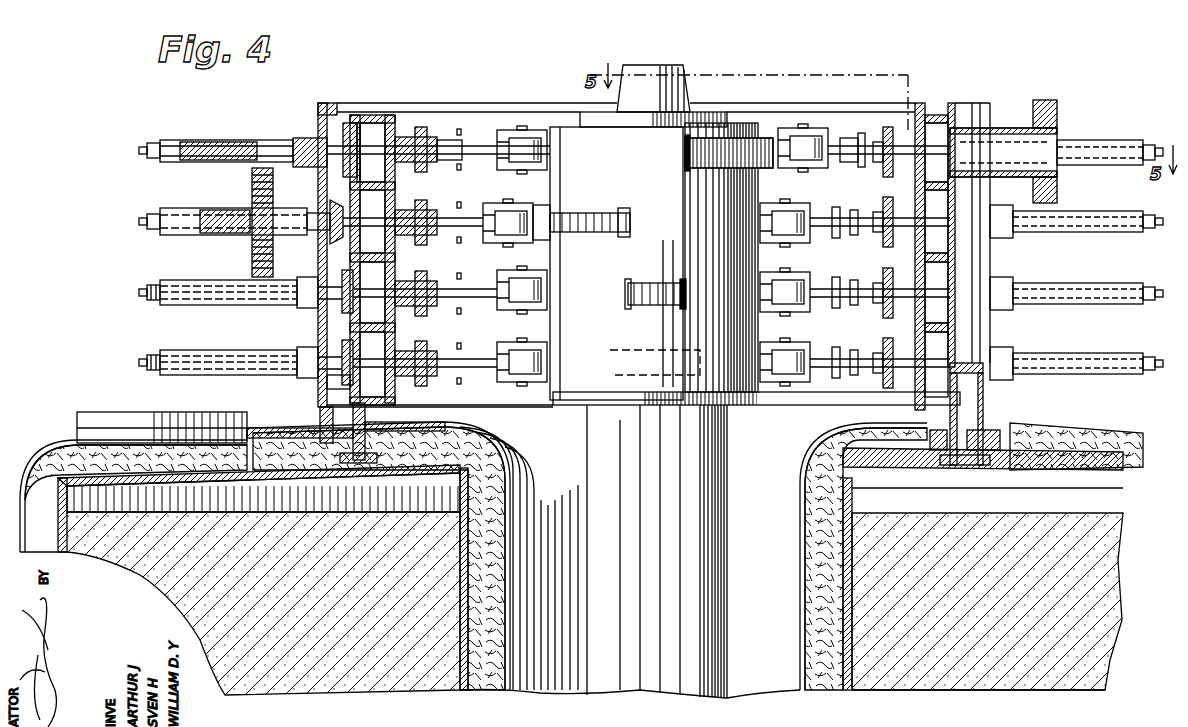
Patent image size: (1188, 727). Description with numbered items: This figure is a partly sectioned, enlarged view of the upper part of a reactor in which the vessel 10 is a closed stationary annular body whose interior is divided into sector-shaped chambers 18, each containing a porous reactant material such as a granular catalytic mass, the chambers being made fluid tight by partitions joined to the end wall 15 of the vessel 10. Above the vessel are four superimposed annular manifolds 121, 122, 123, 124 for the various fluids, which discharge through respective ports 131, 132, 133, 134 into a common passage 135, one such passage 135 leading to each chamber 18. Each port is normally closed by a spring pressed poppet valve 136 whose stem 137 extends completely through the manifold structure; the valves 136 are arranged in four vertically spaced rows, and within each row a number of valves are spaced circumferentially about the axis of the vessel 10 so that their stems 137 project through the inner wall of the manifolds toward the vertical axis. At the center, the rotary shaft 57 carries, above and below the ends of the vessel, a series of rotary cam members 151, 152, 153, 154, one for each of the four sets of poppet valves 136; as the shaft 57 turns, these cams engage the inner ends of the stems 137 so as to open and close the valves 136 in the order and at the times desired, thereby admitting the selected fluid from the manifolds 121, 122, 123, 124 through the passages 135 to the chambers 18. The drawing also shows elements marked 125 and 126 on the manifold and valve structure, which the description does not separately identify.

The vessel 10 is at (1090, 426).
The end wall 15 is at (267, 478).
The chamber 18 is at (422, 553).
The rotary shaft 57 is at (708, 595).
The annular manifold 121 is at (380, 173).
The annular manifold 122 is at (380, 250).
The annular manifold 123 is at (380, 315).
The annular manifold 124 is at (380, 385).
The bearing sleeve 125 is at (1010, 127).
The rack 126 is at (252, 257).
The port 131 is at (343, 130).
The port 132 is at (330, 205).
The port 133 is at (342, 280).
The port 134 is at (342, 350).
The common passage 135 is at (332, 386).
The spring pressed poppet valve 136 is at (357, 140).
The valve stem 137 is at (433, 153).
The rotary cam member 151 is at (710, 160).
The rotary cam member 152 is at (590, 213).
The rotary cam member 153 is at (625, 295).
The rotary cam member 154 is at (612, 350).